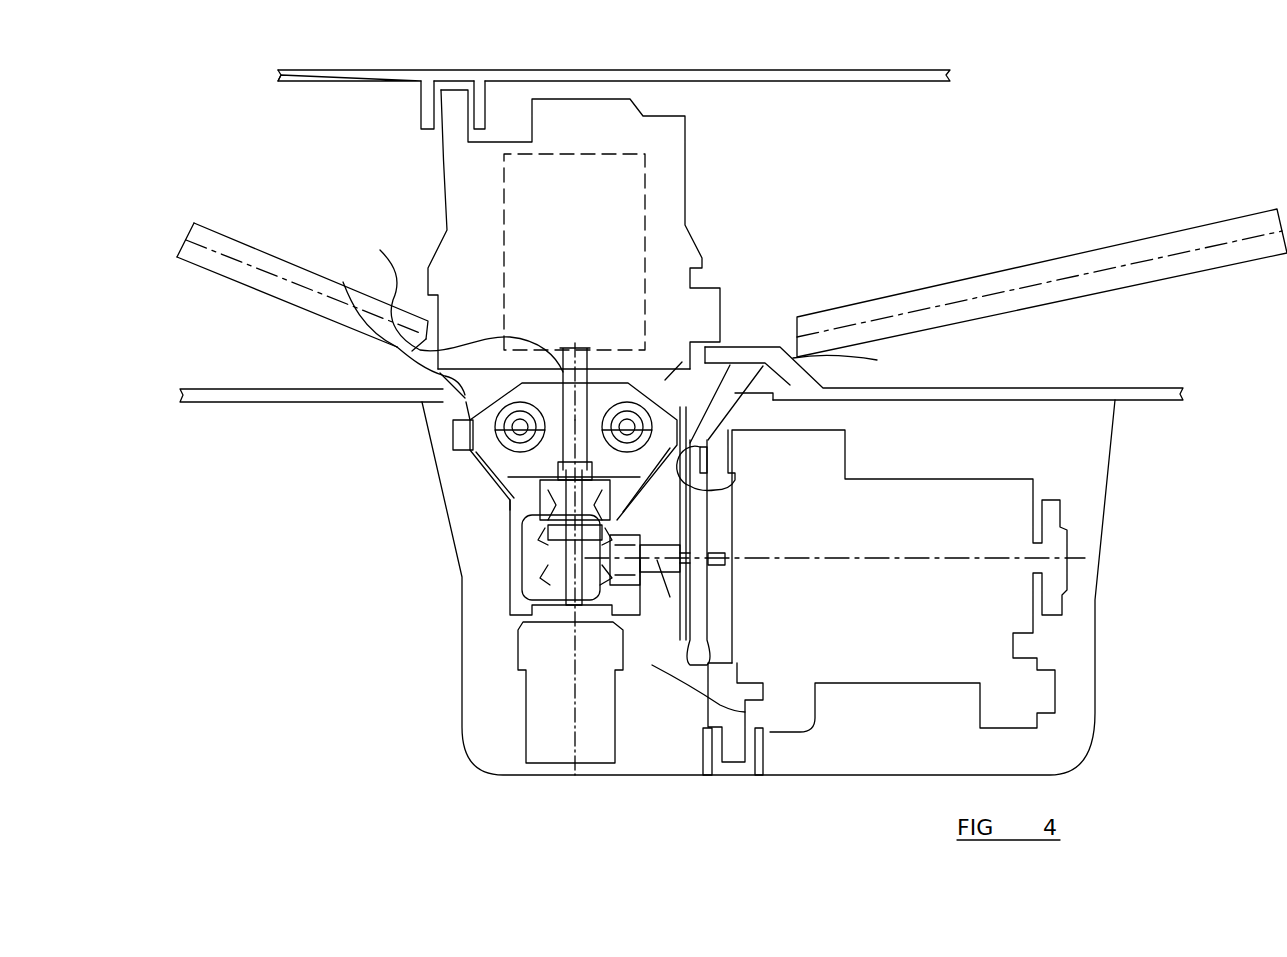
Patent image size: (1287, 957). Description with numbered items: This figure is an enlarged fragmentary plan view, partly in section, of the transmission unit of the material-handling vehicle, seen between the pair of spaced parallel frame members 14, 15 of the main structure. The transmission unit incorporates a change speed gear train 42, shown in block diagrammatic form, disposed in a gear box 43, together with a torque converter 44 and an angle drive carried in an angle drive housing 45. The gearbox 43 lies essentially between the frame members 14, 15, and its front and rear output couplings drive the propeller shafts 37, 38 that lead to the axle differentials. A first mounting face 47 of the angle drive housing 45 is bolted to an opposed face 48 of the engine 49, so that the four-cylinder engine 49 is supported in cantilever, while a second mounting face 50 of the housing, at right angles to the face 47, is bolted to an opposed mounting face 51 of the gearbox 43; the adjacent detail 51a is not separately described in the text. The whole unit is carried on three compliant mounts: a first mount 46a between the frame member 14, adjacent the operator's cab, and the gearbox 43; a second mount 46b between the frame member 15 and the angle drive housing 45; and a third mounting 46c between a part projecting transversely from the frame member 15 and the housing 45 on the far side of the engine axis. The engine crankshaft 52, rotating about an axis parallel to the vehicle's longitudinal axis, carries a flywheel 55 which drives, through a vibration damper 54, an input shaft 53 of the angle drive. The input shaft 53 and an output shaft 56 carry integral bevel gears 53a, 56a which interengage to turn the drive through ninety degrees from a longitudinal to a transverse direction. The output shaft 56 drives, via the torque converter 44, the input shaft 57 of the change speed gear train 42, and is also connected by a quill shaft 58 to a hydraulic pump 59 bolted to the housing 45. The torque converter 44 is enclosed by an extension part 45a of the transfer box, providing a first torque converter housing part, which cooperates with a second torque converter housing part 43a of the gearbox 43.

The first frame member 14 is at (881, 70).
The second frame member 15 is at (1162, 389).
The propeller shaft 37 is at (1128, 262).
The propeller shaft 38 is at (270, 262).
The change speed gear train 42 is at (650, 232).
The gear box 43 is at (593, 100).
The second torque converter housing part 43a is at (348, 274).
The torque converter 44 is at (512, 487).
The angle drive housing 45 is at (522, 546).
The extension part 45a is at (505, 462).
The first mount 46a is at (485, 110).
The second mount 46b is at (878, 360).
The third mounting 46c is at (703, 750).
The first mounting face 47 is at (762, 735).
The mounting face 48 is at (738, 490).
The engine 49 is at (970, 632).
The second mounting face 50 is at (466, 402).
The mounting face 51 is at (470, 452).
The gear housing lug 51a is at (453, 435).
The crankshaft 52 is at (708, 556).
The input shaft 53 is at (660, 580).
The bevel gear 53a is at (598, 570).
The vibration damper 54 is at (675, 580).
The flywheel 55 is at (783, 700).
The output shaft 56 is at (513, 497).
The bevel gear 56a is at (522, 572).
The input shaft 57 is at (460, 306).
The quill shaft 58 is at (515, 600).
The hydraulic pump 59 is at (552, 748).